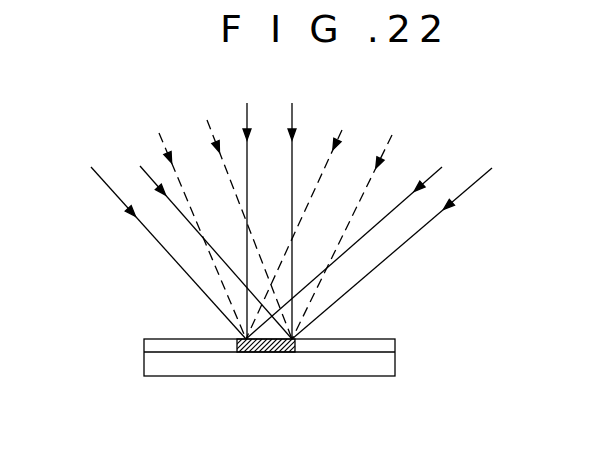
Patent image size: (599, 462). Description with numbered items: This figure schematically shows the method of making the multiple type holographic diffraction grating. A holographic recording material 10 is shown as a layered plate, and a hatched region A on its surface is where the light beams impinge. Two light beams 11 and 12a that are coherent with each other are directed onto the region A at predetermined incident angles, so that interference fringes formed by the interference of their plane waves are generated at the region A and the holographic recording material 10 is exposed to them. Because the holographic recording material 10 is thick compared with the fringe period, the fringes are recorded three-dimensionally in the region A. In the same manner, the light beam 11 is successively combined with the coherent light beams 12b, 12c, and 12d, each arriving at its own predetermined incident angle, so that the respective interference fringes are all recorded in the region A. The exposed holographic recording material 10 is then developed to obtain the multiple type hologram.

The holographic recording material 10 is at (398, 349).
The region A is at (283, 353).
The light beam 11 is at (294, 125).
The light beam 12a is at (99, 176).
The light beam 12b is at (165, 138).
The light beam 12c is at (385, 144).
The light beam 12d is at (471, 186).